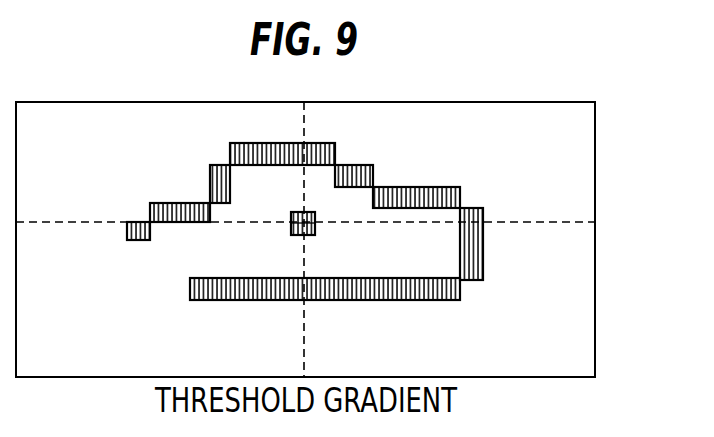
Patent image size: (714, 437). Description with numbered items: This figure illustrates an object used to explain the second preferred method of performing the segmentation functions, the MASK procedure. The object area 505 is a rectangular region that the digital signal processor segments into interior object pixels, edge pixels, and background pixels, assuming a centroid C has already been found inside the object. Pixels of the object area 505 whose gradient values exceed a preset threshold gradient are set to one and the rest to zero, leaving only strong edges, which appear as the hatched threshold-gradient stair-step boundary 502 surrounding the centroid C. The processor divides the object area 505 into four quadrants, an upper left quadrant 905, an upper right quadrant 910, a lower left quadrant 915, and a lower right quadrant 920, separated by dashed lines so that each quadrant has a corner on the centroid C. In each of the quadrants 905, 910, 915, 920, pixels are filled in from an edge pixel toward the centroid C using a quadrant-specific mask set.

The threshold gradient boundary 502 is at (399, 186).
The object area 505 is at (596, 296).
The upper left quadrant 905 is at (85, 138).
The upper right quadrant 910 is at (573, 138).
The lower left quadrant 915 is at (85, 355).
The lower right quadrant 920 is at (574, 355).